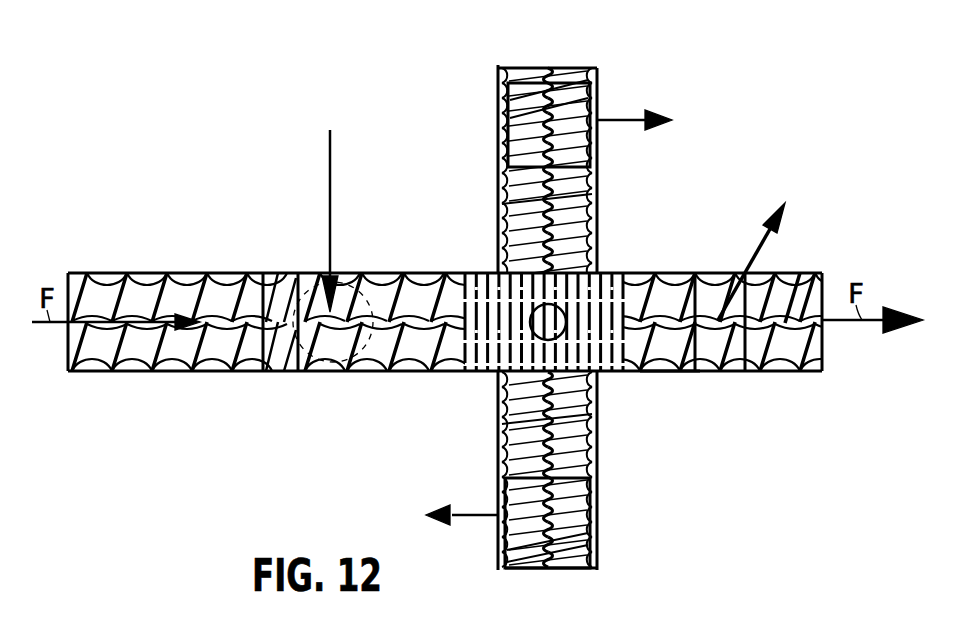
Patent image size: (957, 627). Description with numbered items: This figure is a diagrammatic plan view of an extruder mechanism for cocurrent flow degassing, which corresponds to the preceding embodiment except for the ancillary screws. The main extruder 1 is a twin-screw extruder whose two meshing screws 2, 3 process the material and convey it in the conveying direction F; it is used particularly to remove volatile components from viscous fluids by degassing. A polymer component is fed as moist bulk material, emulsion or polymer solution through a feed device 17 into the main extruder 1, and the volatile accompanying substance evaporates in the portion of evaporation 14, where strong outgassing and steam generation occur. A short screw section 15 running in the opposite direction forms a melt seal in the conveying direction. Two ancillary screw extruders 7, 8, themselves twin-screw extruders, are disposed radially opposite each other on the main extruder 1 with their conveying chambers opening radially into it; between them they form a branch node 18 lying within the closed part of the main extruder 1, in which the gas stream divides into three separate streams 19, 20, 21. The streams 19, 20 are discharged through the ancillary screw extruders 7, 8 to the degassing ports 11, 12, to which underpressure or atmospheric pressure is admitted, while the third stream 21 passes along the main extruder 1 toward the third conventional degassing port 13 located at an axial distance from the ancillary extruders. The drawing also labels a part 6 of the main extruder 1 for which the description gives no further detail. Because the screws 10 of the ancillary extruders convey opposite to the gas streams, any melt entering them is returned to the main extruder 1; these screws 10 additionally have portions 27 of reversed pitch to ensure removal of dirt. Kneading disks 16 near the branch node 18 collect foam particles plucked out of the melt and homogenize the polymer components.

The main extruder 1 is at (655, 263).
The screw 2 is at (797, 295).
The screw 3 is at (797, 345).
The beam web portion 6 is at (670, 372).
The ancillary screw extruder 7 is at (497, 97).
The ancillary screw extruder 8 is at (497, 553).
The screws 10 is at (523, 218).
The degassing port 11 is at (578, 70).
The degassing port 12 is at (560, 572).
The third conventional degassing port 13 is at (735, 372).
The portion of evaporation 14 is at (330, 345).
The short screw section 15 is at (282, 300).
The kneading disks 16 is at (495, 290).
The feed device 17 is at (333, 155).
The branch node 18 is at (533, 328).
The separate stream 19 is at (628, 117).
The separate stream 20 is at (478, 512).
The separate stream 21 is at (755, 252).
The portions of reversed pitch 27 is at (523, 131).